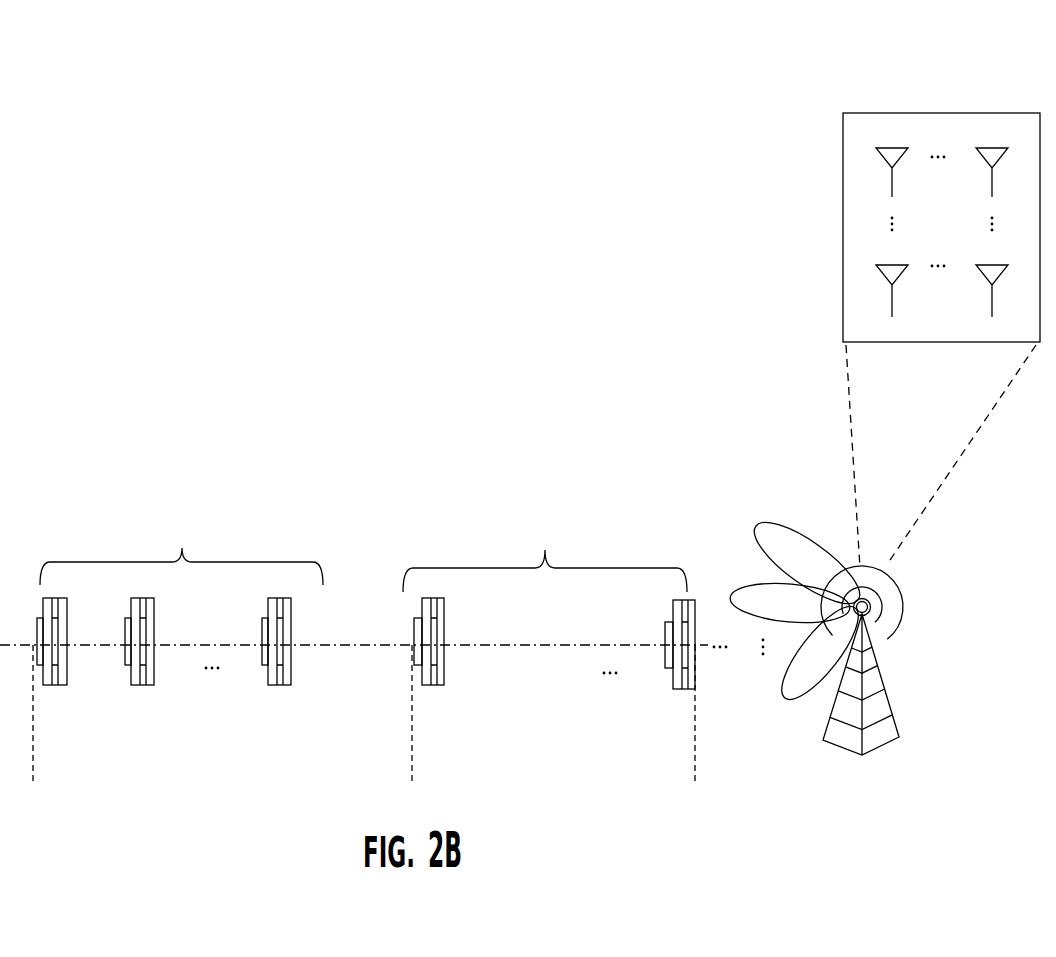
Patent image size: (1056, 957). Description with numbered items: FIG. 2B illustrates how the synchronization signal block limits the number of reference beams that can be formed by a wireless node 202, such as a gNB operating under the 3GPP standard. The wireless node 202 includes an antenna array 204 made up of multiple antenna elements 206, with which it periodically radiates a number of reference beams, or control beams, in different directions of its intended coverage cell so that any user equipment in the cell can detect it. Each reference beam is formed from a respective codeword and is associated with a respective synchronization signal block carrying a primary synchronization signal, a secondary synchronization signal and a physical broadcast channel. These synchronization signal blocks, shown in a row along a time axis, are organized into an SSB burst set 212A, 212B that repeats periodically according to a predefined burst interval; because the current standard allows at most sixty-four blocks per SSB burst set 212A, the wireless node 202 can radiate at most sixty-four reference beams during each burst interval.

The wireless node 202 is at (882, 657).
The antenna array 204 is at (873, 118).
The antenna element 206 is at (987, 148).
The SSB burst set 212A is at (181, 546).
The SSB burst set 212B is at (545, 553).